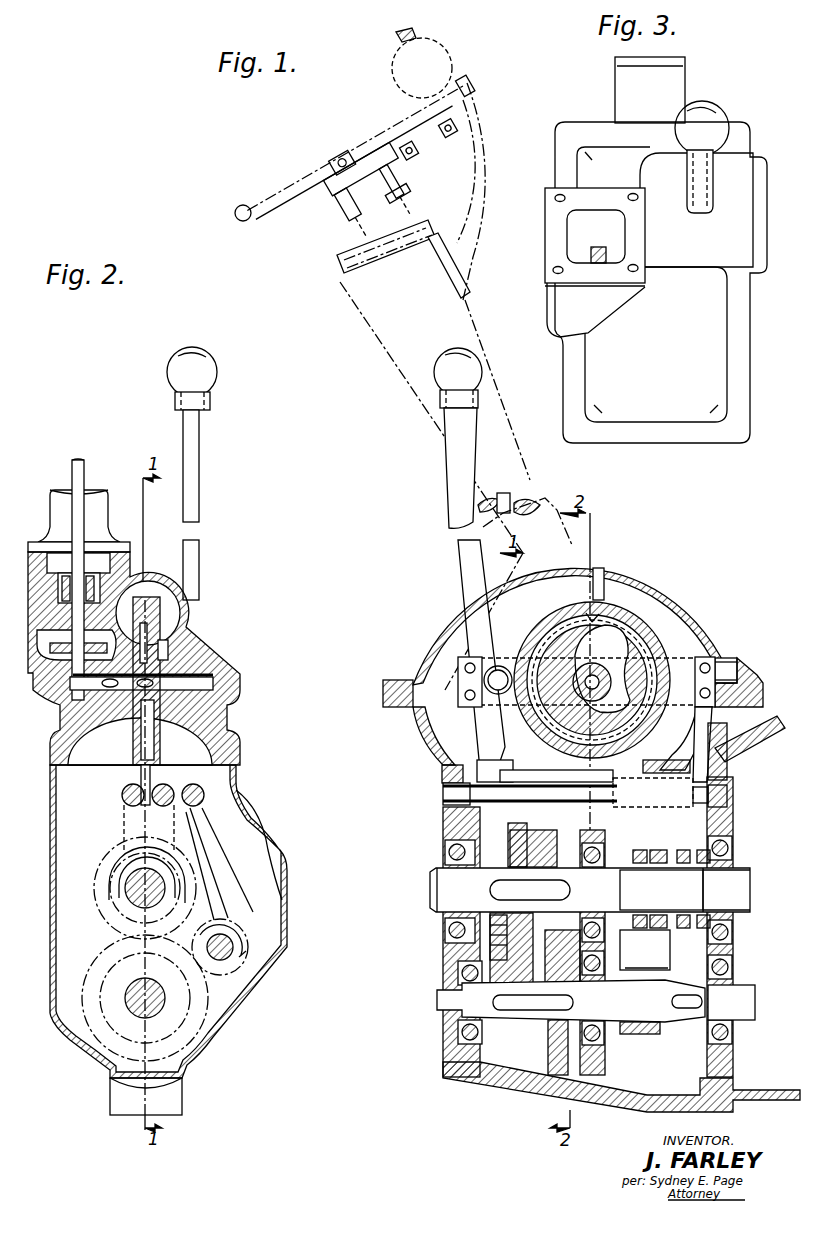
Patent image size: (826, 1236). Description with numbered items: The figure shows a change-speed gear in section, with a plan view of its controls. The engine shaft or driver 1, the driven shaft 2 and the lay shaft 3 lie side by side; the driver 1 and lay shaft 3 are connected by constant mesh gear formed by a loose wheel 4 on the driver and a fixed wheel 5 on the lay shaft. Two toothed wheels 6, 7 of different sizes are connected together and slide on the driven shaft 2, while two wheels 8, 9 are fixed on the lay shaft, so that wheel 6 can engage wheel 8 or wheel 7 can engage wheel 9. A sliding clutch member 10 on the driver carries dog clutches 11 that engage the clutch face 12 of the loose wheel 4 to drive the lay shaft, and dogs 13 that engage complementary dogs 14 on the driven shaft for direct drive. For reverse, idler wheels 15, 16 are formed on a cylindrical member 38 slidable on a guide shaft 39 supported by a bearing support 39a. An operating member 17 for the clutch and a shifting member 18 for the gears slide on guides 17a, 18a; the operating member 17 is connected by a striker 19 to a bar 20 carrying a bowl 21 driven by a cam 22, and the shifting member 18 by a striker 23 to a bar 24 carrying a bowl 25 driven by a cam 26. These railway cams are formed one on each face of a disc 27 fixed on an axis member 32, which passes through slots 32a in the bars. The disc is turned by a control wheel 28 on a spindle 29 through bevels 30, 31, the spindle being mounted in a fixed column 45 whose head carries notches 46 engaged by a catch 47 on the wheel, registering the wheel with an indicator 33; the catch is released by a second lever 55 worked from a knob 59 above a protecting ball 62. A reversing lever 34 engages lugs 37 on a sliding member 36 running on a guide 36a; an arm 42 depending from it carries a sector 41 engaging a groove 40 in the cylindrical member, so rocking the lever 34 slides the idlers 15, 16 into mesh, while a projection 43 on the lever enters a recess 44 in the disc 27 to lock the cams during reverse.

In FIG. 2, the engine shaft 1 is at (740, 886).
In FIG. 2, the driven shaft 2 is at (440, 890).
In FIG. 2, the lay shaft 3 is at (650, 1010).
In FIG. 2, the loose wheel 4 is at (726, 848).
In FIG. 2, the fixed wheel 5 is at (710, 1040).
In FIG. 2, the toothed wheel 6 is at (443, 794).
In FIG. 2, the toothed wheel 7 is at (557, 850).
In FIG. 2, the toothed wheel 8 is at (510, 985).
In FIG. 2, the toothed wheel 9 is at (556, 1045).
In FIG. 2, the sliding clutch member 10 is at (680, 856).
In FIG. 2, the dog clutches 11 is at (660, 956).
In FIG. 2, the clutch face 12 is at (700, 852).
In FIG. 2, the dogs 13 is at (655, 852).
In FIG. 2, the complementary dogs 14 is at (636, 852).
In FIG. 2, the idler wheel 15 is at (490, 928).
In FIG. 2, the idler wheel 16 is at (550, 985).
In FIG. 2, the operating member 17 is at (104, 745).
In FIG. 2, the guide 17a is at (210, 825).
In FIG. 2, the shifting member 18 is at (104, 777).
In FIG. 2, the guide 18a is at (152, 798).
In FIG. 3, the striker 19 is at (661, 282).
In FIG. 2, the striker 19 is at (705, 730).
In FIG. 2, the bar 20 is at (118, 732).
In FIG. 2, the bowl 21 is at (660, 668).
In FIG. 2, the cam 22 is at (638, 648).
In FIG. 2, the striker 23 is at (438, 745).
In FIG. 2, the bar 24 is at (462, 636).
In FIG. 2, the bowl 25 is at (530, 650).
In FIG. 2, the cam 26 is at (605, 665).
In FIG. 2, the disc 27 is at (598, 570).
In FIG. 1, the wheel 28 is at (240, 206).
In FIG. 1, the spindle 29 is at (538, 497).
In FIG. 3, the spindle 29 is at (606, 258).
In FIG. 2, the spindle 29 is at (72, 470).
In FIG. 2, the bevel 30 is at (95, 632).
In FIG. 2, the bevel 31 is at (104, 648).
In FIG. 2, the axis member 32 is at (560, 626).
In FIG. 2, the slot 32a is at (592, 622).
In FIG. 1, the indicator 33 is at (480, 176).
In FIG. 1, the lever 34 is at (452, 506).
In FIG. 3, the lever 34 is at (705, 165).
In FIG. 2, the lever 34 is at (200, 488).
In FIG. 2, the sliding member 36 is at (450, 660).
In FIG. 2, the guide 36a is at (206, 803).
In FIG. 2, the lugs 37 is at (442, 770).
In FIG. 2, the cylindrical member 38 is at (460, 978).
In FIG. 2, the guide shaft 39 is at (630, 1015).
In FIG. 2, the bearing support 39a is at (726, 940).
In FIG. 2, the groove 40 is at (458, 960).
In FIG. 2, the sector 41 is at (244, 957).
In FIG. 2, the arm 42 is at (445, 850).
In FIG. 2, the projection 43 is at (405, 680).
In FIG. 2, the recess 44 is at (468, 612).
In FIG. 1, the fixed column 45 is at (432, 388).
In FIG. 2, the fixed column 45 is at (50, 515).
In FIG. 1, the notches 46 is at (353, 215).
In FIG. 1, the catch 47 is at (415, 150).
In FIG. 1, the second lever 55 is at (428, 140).
In FIG. 1, the knob 59 is at (397, 35).
In FIG. 1, the protecting ball 62 is at (440, 52).